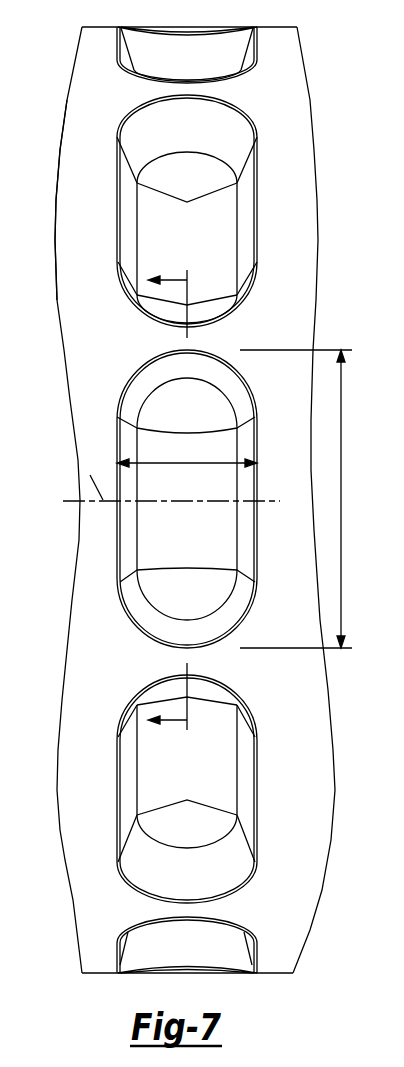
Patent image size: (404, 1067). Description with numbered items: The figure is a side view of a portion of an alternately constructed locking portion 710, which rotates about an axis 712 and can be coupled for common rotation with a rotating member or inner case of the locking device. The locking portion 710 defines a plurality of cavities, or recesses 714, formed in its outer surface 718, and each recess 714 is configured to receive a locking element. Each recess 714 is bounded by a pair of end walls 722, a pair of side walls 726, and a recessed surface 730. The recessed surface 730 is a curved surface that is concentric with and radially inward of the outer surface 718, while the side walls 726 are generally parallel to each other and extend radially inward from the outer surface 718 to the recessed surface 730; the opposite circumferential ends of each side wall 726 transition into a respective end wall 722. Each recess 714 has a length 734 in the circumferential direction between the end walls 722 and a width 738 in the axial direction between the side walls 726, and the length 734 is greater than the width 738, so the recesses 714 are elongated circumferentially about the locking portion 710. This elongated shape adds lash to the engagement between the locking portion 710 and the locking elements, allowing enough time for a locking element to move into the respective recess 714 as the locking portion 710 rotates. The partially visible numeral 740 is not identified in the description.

The locking portion 710 is at (58, 83).
The outer surface 718 is at (72, 197).
The end walls 722 is at (157, 372).
The side walls 726 is at (128, 557).
The recessed surface 730 is at (165, 547).
The axis 712 is at (79, 461).
The recess 714 is at (147, 511).
The width 738 is at (217, 463).
The length 734 is at (342, 464).
The reference dimension 740 is at (399, 304).